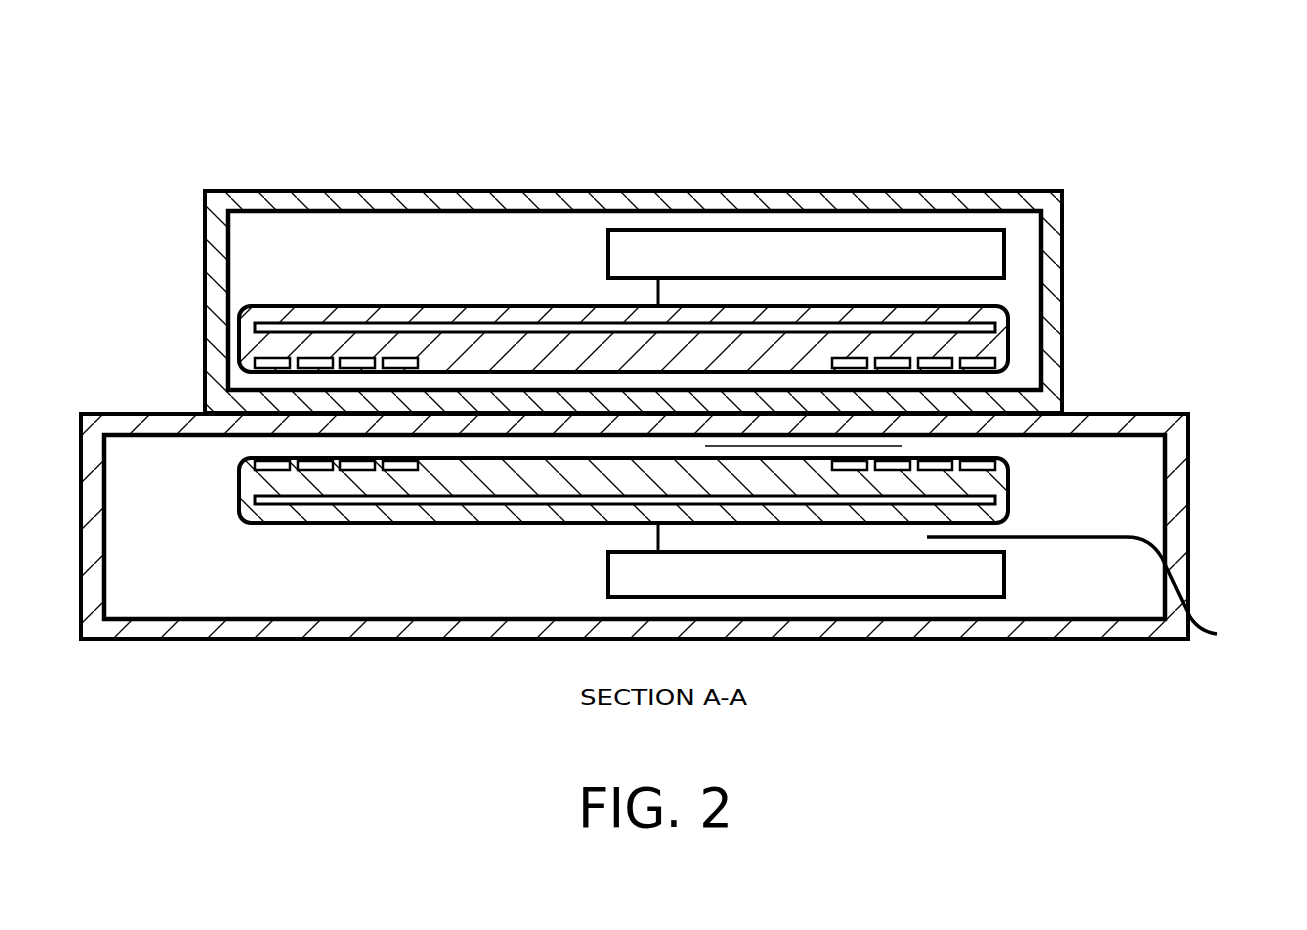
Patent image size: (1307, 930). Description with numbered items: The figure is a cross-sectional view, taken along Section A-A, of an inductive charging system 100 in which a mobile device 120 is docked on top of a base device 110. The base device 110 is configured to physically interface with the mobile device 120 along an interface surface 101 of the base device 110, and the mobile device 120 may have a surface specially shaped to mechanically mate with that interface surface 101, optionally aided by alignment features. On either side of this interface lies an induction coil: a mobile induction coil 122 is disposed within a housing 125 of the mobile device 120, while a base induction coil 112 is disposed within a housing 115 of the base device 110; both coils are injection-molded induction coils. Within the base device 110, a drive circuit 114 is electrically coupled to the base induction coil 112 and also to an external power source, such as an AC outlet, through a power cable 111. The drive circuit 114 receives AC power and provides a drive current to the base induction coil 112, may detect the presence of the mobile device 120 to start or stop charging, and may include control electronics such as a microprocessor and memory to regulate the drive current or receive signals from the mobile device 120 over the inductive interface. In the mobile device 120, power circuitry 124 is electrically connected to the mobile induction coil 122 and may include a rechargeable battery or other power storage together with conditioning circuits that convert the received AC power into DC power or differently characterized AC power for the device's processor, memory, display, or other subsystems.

The inductive charging system 100 is at (148, 51).
The interface surface 101 is at (143, 412).
The base device 110 is at (183, 597).
The power cable 111 is at (1197, 613).
The base induction coil 112 is at (1000, 462).
The drive circuit 114 is at (831, 582).
The housing 115 is at (250, 638).
The mobile device 120 is at (302, 256).
The mobile induction coil 122 is at (997, 300).
The power circuitry 124 is at (848, 266).
The housing 125 is at (254, 190).